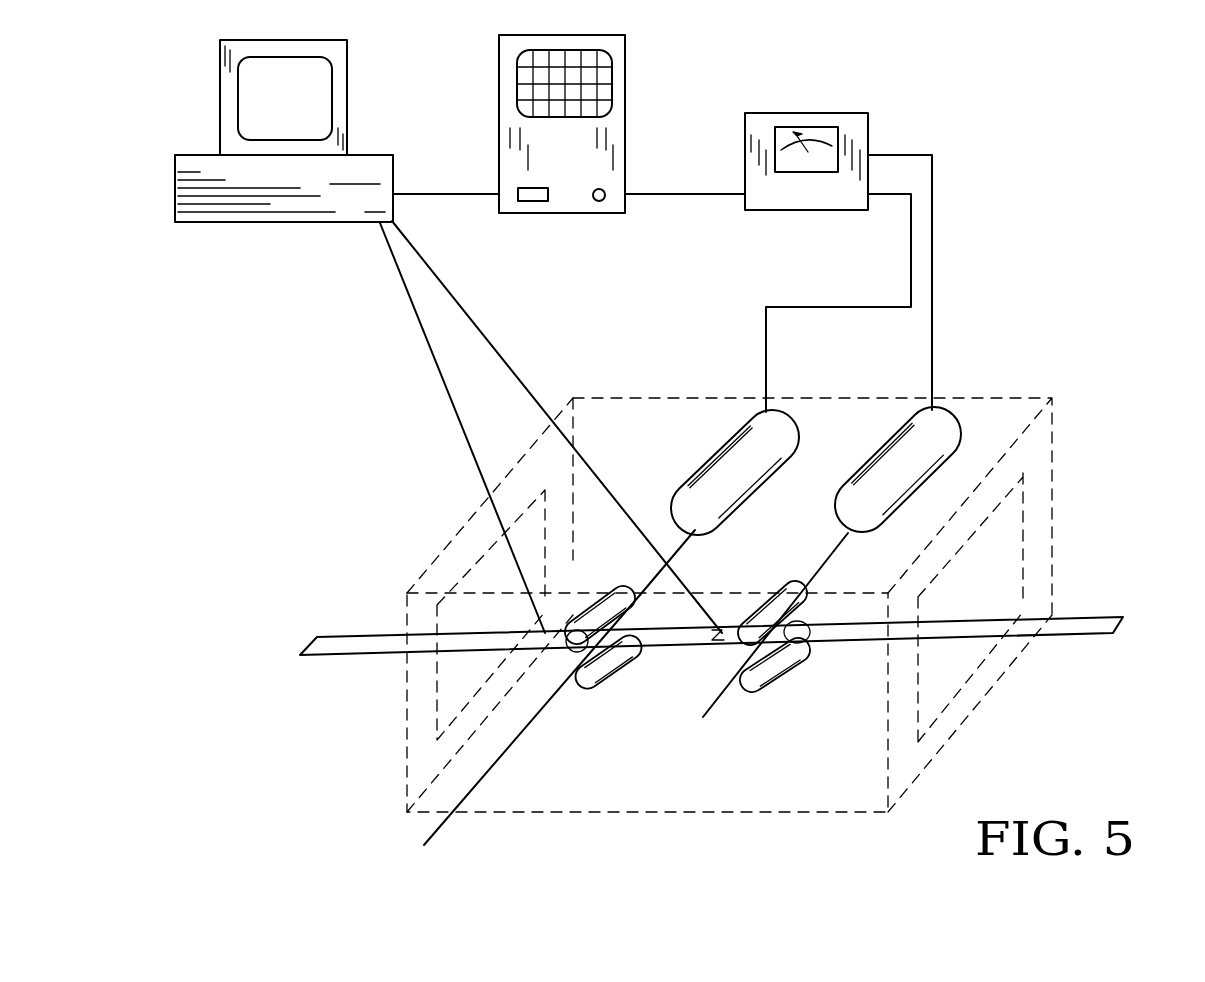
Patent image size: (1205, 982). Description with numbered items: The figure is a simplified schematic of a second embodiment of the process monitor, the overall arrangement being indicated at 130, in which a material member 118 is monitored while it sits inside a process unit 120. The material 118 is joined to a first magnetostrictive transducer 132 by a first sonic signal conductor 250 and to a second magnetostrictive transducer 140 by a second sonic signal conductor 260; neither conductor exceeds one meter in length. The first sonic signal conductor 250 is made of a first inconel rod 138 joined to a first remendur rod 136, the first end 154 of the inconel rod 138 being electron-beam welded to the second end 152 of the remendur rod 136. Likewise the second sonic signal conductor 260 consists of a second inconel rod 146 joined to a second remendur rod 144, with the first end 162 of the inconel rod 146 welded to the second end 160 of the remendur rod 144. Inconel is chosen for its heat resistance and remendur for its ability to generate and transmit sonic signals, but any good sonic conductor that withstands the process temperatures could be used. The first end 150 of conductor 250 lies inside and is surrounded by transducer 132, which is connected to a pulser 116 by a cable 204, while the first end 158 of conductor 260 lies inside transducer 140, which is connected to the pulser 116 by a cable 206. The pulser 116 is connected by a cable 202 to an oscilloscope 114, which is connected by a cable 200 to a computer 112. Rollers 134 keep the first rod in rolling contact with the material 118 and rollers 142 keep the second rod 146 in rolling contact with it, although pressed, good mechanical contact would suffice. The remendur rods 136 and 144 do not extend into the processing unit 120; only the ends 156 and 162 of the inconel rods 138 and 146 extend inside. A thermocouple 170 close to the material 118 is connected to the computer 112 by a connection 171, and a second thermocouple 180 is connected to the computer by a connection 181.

The computer 112 is at (240, 225).
The oscilloscope 114 is at (545, 214).
The pulser 116 is at (760, 212).
The material member 118 is at (352, 636).
The process unit 120 is at (945, 753).
The measuring arrangement 130 is at (1093, 533).
The first magnetostrictive transducer 132 is at (723, 445).
The rollers 134 is at (623, 585).
The first remendur rod 136 is at (683, 540).
The first inconel rod 138 is at (533, 727).
The second magnetostrictive transducer 140 is at (955, 440).
The rollers 142 is at (793, 657).
The second remendur rod 144 is at (827, 563).
The second inconel rod 146 is at (737, 687).
The first end of sonic signal conductor 150 is at (677, 497).
The second end of first remendur rod 152 is at (665, 585).
The first end of inconel rod 154 is at (620, 636).
The end of inconel rod 156 is at (430, 838).
The first end of sonic signal conductor 158 is at (852, 502).
The second end of second remendur rod 160 is at (825, 567).
The first end of second inconel rod 162 is at (812, 582).
The thermocouple 170 is at (530, 648).
The connection 171 is at (421, 337).
The thermocouple 180 is at (705, 642).
The connection 181 is at (450, 292).
The cable 200 is at (476, 192).
The cable 202 is at (708, 192).
The cable 204 is at (910, 280).
The cable 206 is at (934, 316).
The first sonic signal conductor 250 is at (653, 537).
The second sonic signal conductor 260 is at (917, 513).